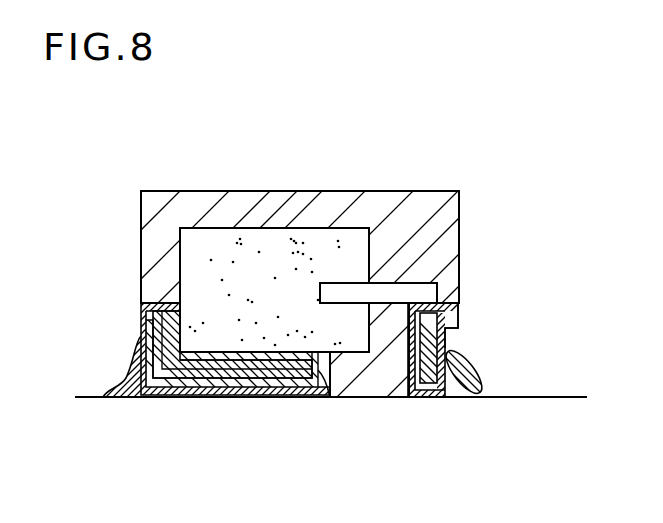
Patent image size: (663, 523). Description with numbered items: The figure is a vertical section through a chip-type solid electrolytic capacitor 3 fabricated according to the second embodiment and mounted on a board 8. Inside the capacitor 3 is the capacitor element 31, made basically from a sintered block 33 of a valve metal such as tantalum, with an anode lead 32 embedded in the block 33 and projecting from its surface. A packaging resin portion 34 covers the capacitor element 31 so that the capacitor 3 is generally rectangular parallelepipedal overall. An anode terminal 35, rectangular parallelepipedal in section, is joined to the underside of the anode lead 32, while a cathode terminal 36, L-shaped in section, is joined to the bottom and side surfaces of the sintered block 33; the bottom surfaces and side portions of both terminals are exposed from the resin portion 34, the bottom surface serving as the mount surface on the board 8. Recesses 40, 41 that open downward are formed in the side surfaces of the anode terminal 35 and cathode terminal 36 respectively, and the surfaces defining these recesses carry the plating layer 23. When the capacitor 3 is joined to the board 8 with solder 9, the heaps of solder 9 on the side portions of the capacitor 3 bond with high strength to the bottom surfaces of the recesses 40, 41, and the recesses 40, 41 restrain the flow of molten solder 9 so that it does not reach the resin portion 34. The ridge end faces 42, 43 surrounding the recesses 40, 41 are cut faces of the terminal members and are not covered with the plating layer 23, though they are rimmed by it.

The solid electrolytic capacitor 3 is at (441, 182).
The board 8 is at (540, 395).
The solder 9 is at (127, 373).
The plating layer 23 is at (387, 382).
The capacitor element 31 is at (292, 192).
The anode lead 32 is at (425, 285).
The sintered block 33 is at (212, 237).
The packaging resin portion 34 is at (442, 218).
The anode terminal 35 is at (423, 384).
The cathode terminal 36 is at (208, 372).
The recess 40 is at (458, 337).
The recess 41 is at (144, 335).
The ridge end face 42 is at (448, 316).
The ridge end face 43 is at (142, 310).